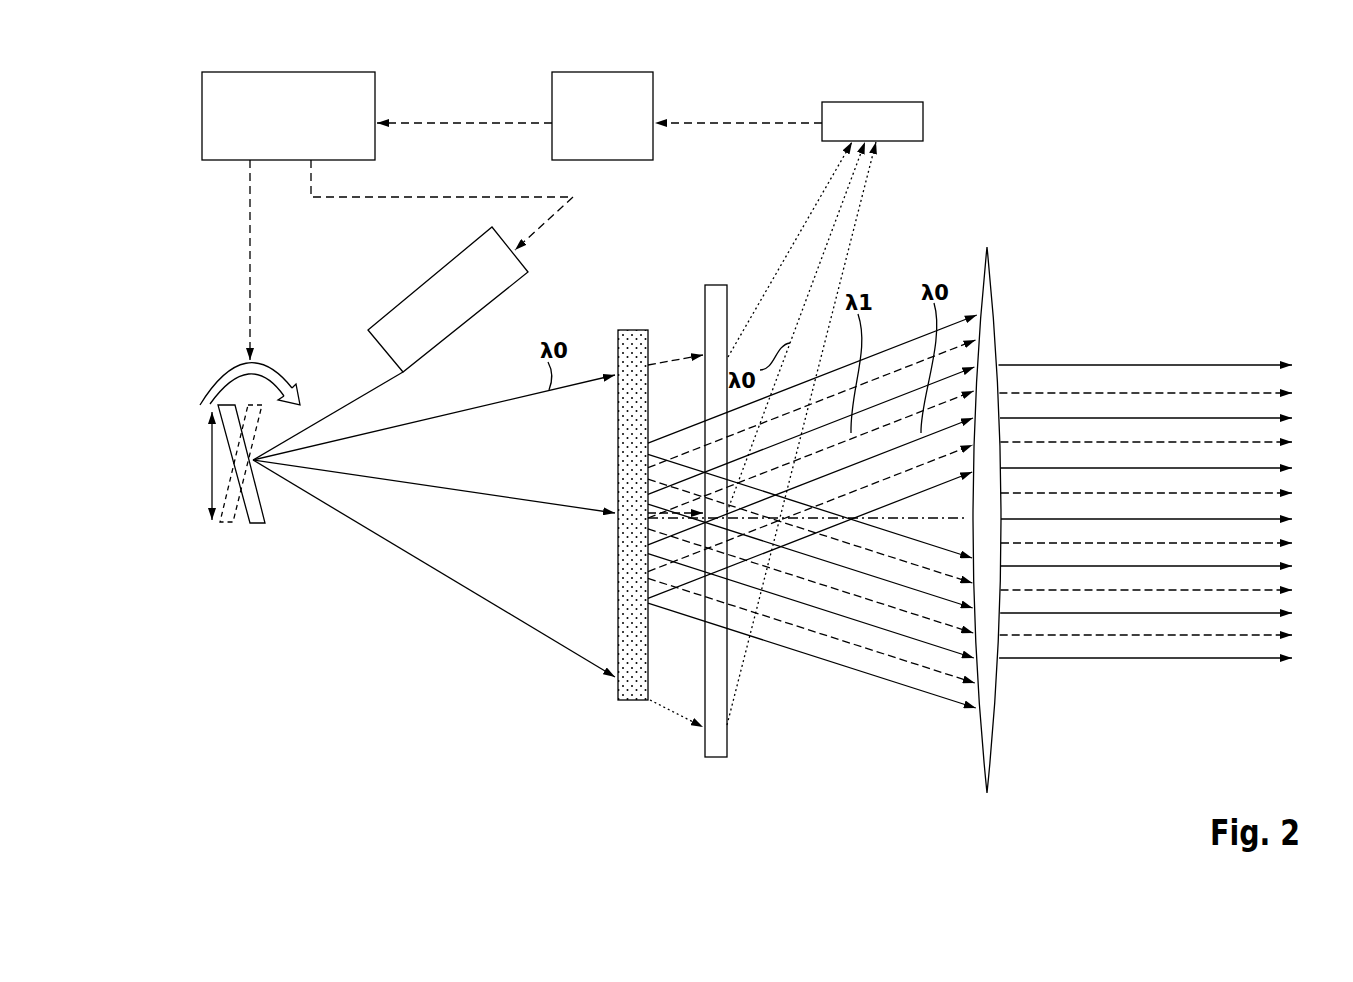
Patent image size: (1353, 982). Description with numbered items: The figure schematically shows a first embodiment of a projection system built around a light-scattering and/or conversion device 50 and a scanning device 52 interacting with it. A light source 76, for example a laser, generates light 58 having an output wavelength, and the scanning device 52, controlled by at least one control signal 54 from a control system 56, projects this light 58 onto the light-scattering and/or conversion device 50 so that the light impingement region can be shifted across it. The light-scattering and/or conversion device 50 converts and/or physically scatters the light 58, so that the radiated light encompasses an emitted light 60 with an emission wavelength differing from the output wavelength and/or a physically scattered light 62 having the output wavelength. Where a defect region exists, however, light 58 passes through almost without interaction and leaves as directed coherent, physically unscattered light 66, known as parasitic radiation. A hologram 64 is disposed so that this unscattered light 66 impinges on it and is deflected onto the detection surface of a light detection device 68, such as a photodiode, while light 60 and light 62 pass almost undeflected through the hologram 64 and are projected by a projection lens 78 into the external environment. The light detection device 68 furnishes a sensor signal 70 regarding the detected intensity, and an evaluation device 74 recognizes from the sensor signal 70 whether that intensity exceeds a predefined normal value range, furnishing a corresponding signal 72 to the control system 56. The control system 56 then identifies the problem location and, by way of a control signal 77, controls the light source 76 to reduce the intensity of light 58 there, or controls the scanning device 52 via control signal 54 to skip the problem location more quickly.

The light-scattering and/or conversion device 50 is at (632, 702).
The scanning device 52 is at (256, 525).
The control signal 54 is at (252, 298).
The control system 56 is at (376, 95).
The light 58 is at (353, 374).
The emitted light 60 is at (853, 590).
The physically scattered light 62 is at (918, 593).
The hologram 64 is at (715, 285).
The physically unscattered light 66 is at (831, 178).
The light detection device 68 is at (924, 120).
The sensor signal 70 is at (741, 126).
The signal 72 is at (518, 126).
The evaluation device 74 is at (632, 162).
The light source 76 is at (531, 268).
The control signal 77 is at (354, 200).
The projection lens 78 is at (996, 745).